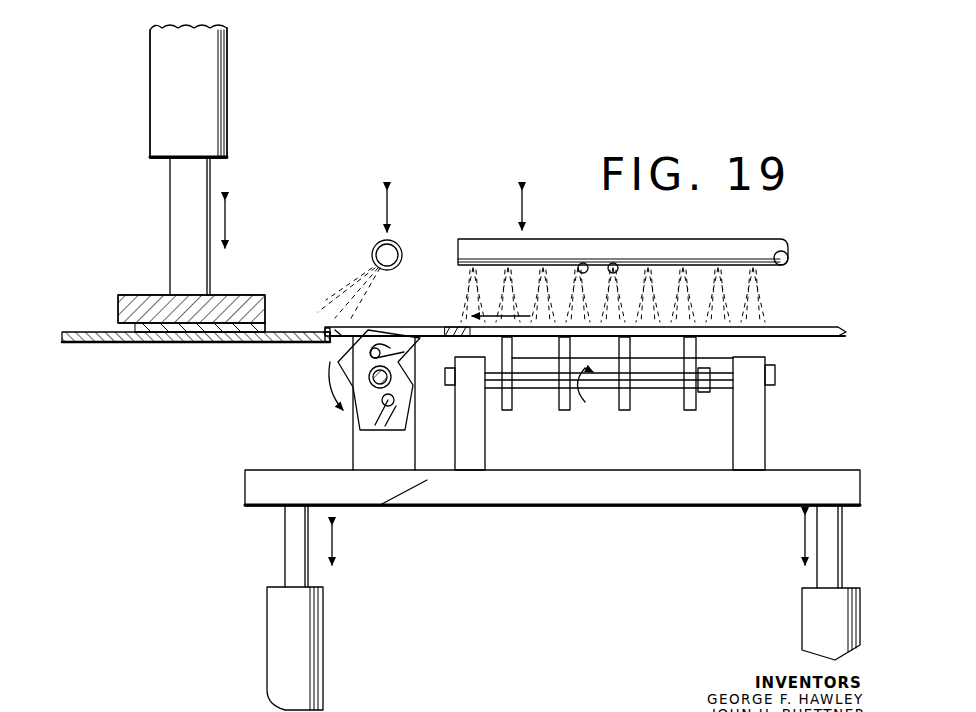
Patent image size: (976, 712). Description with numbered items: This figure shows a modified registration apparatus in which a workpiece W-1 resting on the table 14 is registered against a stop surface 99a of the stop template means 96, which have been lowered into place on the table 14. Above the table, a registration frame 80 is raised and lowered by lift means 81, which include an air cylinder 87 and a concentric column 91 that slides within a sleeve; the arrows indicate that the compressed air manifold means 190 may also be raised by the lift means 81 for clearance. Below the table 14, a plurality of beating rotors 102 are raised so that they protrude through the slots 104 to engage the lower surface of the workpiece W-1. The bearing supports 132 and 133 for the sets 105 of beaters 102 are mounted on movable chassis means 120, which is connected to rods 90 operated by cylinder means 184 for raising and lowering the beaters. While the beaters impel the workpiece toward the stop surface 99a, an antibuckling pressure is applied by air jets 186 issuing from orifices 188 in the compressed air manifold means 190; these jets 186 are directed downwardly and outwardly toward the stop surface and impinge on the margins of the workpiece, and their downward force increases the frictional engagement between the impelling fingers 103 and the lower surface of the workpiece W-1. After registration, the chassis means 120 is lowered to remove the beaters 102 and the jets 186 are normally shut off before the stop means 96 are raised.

The lift means 81 is at (110, 76).
The air cylinder 87 is at (160, 96).
The concentric column 91 is at (178, 187).
The registration frame 80 is at (132, 290).
The stop template means 96 is at (130, 318).
The stop surface 99a is at (262, 322).
The table 14 is at (95, 344).
The workpiece W-1 is at (778, 326).
The compressed air manifold means 190 is at (393, 240).
The air jets 186 is at (350, 293).
The orifices 188 is at (613, 266).
The slots 104 is at (334, 341).
The impelling fingers 103 is at (383, 424).
The beating rotors 102 is at (398, 380).
The sets of beaters 105 is at (706, 420).
The bearing support 132 is at (470, 446).
The bearing support 133 is at (760, 407).
The movable chassis means 120 is at (795, 485).
The rods 90 is at (292, 540).
The cylinder means 184 is at (275, 640).